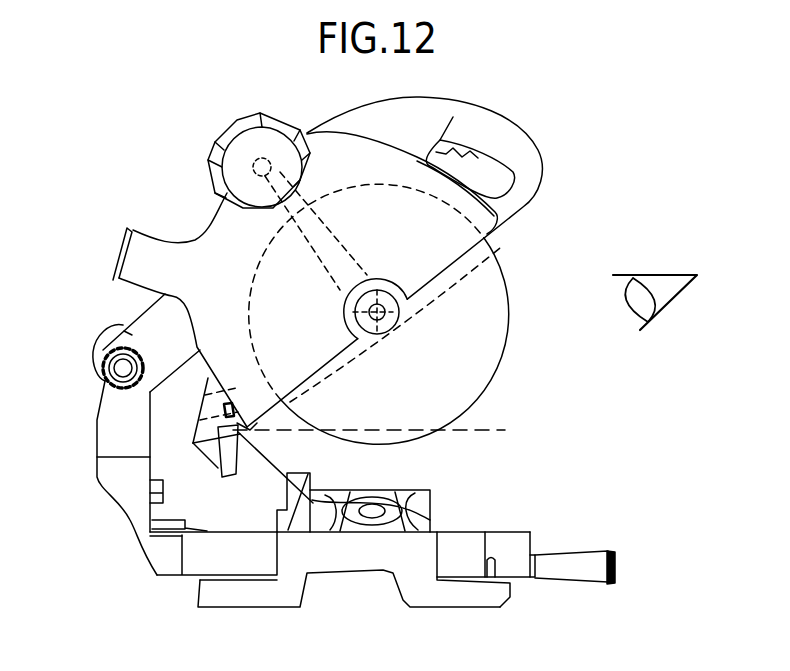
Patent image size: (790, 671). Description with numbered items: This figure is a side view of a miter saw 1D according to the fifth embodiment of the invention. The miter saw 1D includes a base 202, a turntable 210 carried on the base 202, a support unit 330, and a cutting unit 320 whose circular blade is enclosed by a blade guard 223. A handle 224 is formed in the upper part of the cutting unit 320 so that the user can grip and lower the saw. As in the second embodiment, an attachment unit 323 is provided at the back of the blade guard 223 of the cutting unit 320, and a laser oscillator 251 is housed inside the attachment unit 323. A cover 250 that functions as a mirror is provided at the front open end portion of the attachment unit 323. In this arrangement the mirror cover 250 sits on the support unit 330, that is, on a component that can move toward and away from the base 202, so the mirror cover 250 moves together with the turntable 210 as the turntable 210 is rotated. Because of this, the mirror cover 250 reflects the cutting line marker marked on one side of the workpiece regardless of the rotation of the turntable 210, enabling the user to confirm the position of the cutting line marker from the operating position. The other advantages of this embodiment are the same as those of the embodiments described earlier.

The miter saw 1D is at (652, 132).
The cutting unit 320 is at (535, 124).
The blade guard 223 is at (427, 246).
The handle 224 is at (527, 163).
The support unit 330 is at (81, 466).
The laser oscillator 251 is at (200, 428).
The attachment unit 323 is at (218, 468).
The cover 250 is at (240, 472).
The turntable 210 is at (463, 537).
The base 202 is at (397, 556).